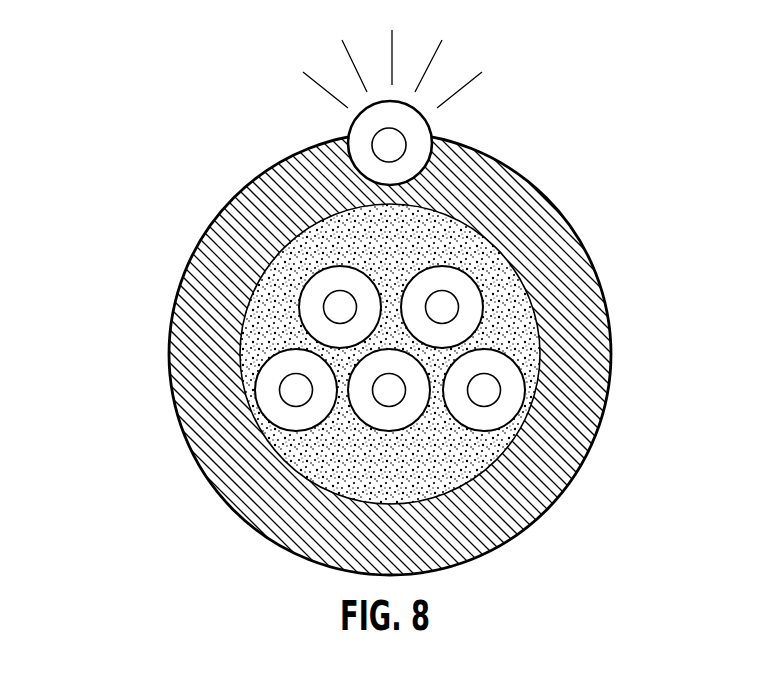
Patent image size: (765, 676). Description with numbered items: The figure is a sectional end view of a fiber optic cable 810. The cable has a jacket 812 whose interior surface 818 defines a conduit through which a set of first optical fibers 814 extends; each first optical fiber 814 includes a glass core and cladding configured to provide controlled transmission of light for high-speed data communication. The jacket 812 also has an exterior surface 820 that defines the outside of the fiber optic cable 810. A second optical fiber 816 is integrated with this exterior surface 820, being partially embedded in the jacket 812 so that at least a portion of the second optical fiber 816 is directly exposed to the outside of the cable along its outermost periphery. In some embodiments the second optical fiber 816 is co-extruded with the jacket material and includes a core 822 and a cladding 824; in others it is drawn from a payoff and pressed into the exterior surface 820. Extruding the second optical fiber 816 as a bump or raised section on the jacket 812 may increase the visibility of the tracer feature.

The fiber optic cable 810 is at (134, 136).
The jacket 812 is at (553, 268).
The first optical fiber 814 is at (391, 383).
The second optical fiber 816 is at (384, 142).
The interior surface 818 is at (287, 393).
The exterior surface 820 is at (220, 516).
The core 822 is at (350, 132).
The cladding 824 is at (381, 143).